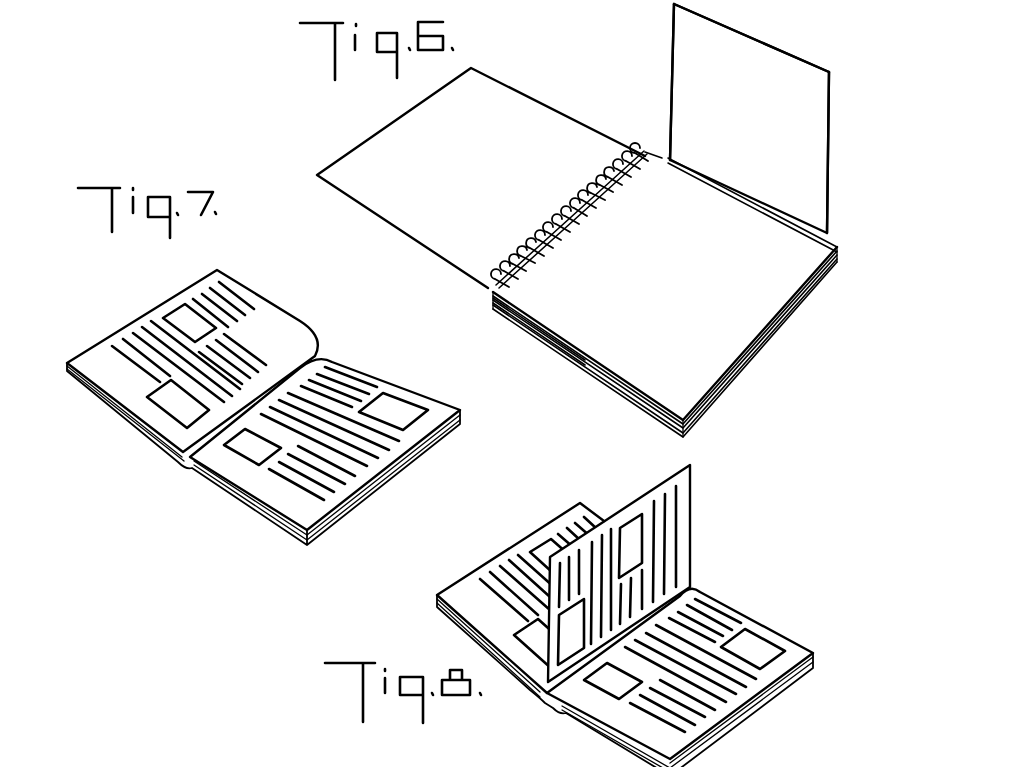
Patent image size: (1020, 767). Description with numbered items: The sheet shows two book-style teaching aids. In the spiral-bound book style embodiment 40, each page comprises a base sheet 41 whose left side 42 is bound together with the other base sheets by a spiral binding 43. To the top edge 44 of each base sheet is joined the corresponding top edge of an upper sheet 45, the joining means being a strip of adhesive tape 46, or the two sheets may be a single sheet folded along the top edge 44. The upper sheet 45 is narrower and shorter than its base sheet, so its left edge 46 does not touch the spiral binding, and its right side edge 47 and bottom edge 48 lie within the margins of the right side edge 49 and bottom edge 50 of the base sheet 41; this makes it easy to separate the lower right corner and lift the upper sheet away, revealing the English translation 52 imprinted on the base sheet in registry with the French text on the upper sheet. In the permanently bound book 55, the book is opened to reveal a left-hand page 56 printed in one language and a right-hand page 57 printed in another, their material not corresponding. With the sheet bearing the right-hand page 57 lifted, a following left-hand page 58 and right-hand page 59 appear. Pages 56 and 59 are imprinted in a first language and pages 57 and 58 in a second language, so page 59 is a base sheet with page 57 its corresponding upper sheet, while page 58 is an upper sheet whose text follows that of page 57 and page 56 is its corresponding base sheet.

In FIG. 6, the book style embodiment 40 is at (577, 252).
In FIG. 6, the base sheet 41 is at (697, 390).
In FIG. 6, the left side 42 is at (567, 215).
In FIG. 6, the spiral binding 43 is at (547, 232).
In FIG. 6, the top edge 44 is at (658, 155).
In FIG. 6, the upper sheet 45 is at (747, 118).
In FIG. 6, the strip of adhesive tape 46 is at (673, 79).
In FIG. 6, the right side edge 47 is at (827, 173).
In FIG. 6, the bottom edge 48 is at (773, 45).
In FIG. 6, the right side edge 49 is at (733, 370).
In FIG. 6, the bottom edge 50 is at (543, 327).
In FIG. 6, the English translation 52 is at (687, 233).
In FIG. 7, the book 55 is at (265, 394).
In FIG. 8, the book 55 is at (628, 616).
In FIG. 7, the left-hand page 56 is at (218, 272).
In FIG. 8, the left-hand page 56 is at (550, 530).
In FIG. 7, the right-hand page 57 is at (437, 415).
In FIG. 8, the left-hand page 58 is at (683, 482).
In FIG. 8, the right-hand page 59 is at (790, 643).